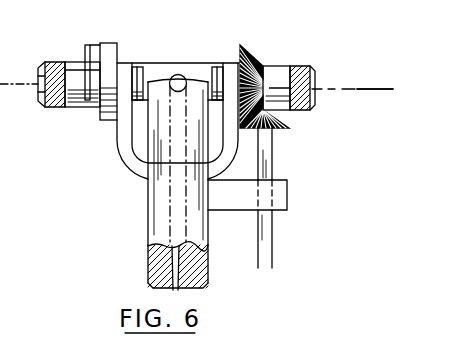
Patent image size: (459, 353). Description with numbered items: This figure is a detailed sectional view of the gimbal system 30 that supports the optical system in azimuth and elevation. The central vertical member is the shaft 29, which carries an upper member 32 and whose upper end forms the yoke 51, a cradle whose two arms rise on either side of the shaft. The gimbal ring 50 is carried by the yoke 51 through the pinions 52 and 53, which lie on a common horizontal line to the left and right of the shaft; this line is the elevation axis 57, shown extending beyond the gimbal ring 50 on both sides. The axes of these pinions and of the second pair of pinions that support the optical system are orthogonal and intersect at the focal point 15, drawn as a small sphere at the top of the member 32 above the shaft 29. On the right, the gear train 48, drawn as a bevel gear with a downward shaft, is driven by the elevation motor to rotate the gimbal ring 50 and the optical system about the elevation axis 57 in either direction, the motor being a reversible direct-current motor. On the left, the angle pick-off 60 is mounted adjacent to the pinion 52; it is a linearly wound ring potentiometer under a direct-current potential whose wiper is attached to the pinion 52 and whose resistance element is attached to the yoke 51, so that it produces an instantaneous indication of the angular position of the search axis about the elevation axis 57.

The focal point 15 is at (177, 75).
The shaft 29 is at (147, 210).
The gimbal system 30 is at (157, 60).
The cylindrical member 32 is at (190, 80).
The gear train 48 is at (299, 130).
The gimbal ring 50 is at (283, 67).
The yoke 51 is at (118, 142).
The pinion 52 is at (78, 77).
The pinion 53 is at (273, 78).
The elevation axis 57 is at (363, 88).
The angle pick-off 60 is at (110, 43).